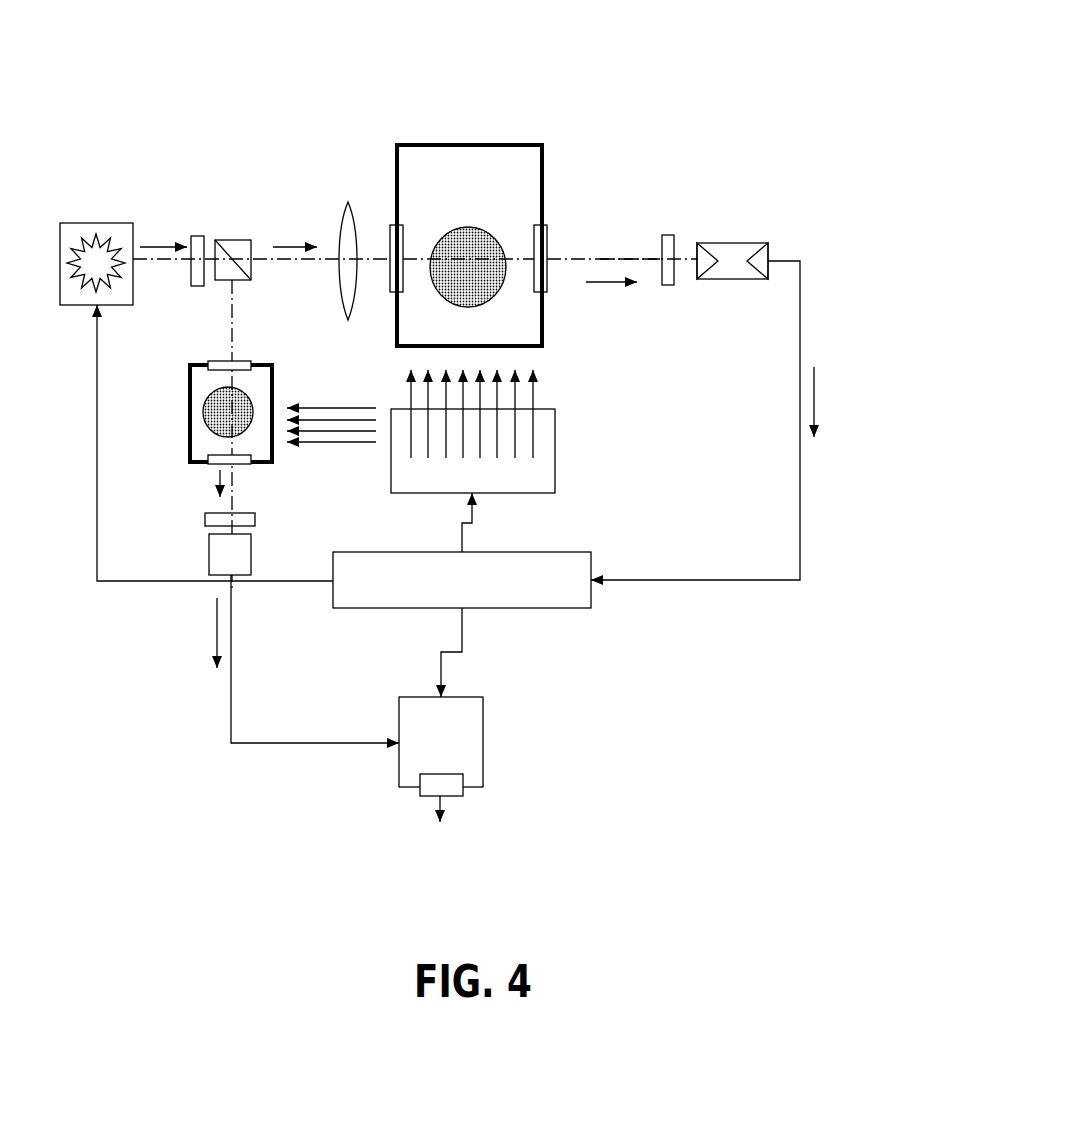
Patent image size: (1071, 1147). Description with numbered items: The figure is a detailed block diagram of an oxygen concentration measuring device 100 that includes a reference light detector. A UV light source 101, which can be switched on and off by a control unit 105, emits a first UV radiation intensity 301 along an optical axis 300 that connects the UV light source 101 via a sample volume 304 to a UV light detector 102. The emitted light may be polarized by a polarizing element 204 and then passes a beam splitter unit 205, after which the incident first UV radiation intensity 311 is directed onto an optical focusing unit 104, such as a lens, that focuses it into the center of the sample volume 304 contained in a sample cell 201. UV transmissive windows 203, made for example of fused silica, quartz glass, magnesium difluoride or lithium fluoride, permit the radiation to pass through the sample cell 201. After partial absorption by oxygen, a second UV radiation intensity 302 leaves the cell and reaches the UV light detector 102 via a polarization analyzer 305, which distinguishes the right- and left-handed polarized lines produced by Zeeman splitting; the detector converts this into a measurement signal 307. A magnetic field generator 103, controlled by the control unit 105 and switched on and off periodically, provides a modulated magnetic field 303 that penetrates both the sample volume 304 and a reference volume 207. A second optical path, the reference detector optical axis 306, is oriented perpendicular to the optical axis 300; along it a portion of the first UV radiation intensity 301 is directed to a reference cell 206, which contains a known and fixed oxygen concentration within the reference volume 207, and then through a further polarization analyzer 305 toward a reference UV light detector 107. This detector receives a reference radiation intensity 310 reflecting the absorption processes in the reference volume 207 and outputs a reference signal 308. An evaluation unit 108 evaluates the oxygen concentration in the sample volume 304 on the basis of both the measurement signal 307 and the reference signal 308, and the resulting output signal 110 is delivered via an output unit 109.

The oxygen concentration measuring device 100 is at (667, 43).
The UV light source 101 is at (97, 222).
The UV light detector 102 is at (733, 243).
The magnetic field generator 103 is at (555, 450).
The optical focusing unit 104 is at (348, 320).
The control unit 105 is at (358, 597).
The reference UV light detector 107 is at (207, 552).
The evaluation unit 108 is at (485, 740).
The output unit 109 is at (430, 789).
The output signal 110 is at (443, 807).
The sample cell 201 is at (468, 145).
The UV transmissive window 203 is at (398, 247).
The polarizing element 204 is at (197, 288).
The beam splitter unit 205 is at (233, 238).
The reference cell 206 is at (190, 415).
The reference volume 207 is at (217, 422).
The optical axis 300 is at (620, 257).
The first UV radiation intensity 301 is at (158, 248).
The second UV radiation intensity 302 is at (602, 282).
The magnetic field 303 is at (340, 431).
The sample volume 304 is at (468, 227).
The polarization analyzer 305 is at (670, 285).
The reference detector optical axis 306 is at (232, 352).
The measurement signal 307 is at (813, 382).
The reference signal 308 is at (217, 613).
The reference radiation intensity 310 is at (217, 478).
The incident first UV radiation intensity 311 is at (292, 245).